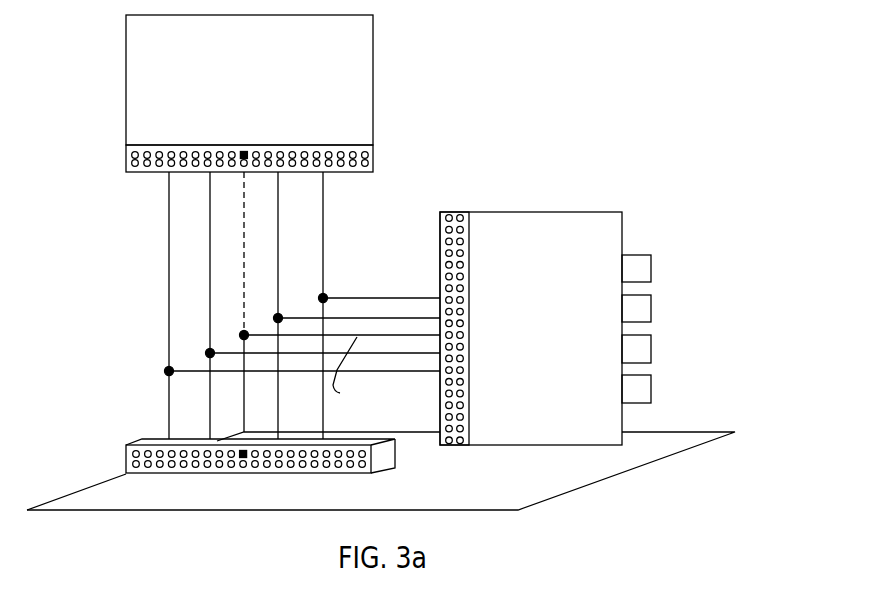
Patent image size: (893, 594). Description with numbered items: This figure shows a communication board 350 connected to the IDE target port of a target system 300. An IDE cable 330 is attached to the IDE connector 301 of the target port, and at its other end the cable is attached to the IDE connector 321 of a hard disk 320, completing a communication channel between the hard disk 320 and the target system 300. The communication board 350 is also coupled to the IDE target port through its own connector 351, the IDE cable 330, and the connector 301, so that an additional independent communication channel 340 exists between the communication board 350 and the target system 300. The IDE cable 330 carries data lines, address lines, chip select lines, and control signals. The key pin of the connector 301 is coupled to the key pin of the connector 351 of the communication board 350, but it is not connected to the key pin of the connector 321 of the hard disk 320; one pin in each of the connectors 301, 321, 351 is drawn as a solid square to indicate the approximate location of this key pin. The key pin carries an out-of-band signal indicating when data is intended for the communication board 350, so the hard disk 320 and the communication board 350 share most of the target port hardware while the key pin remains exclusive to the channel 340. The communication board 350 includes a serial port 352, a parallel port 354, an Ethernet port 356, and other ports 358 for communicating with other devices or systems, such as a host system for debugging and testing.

The target system 300 is at (368, 503).
The IDE connector 301 is at (122, 460).
The hard disk 320 is at (261, 116).
The IDE connector 321 is at (125, 162).
The IDE cable 330 is at (119, 416).
The independent communication channel 340 is at (378, 285).
The communication board 350 is at (532, 374).
The connector 351 is at (457, 212).
The serial port 352 is at (715, 271).
The parallel port 354 is at (737, 310).
The Ethernet port 356 is at (738, 348).
The other ports 358 is at (722, 392).